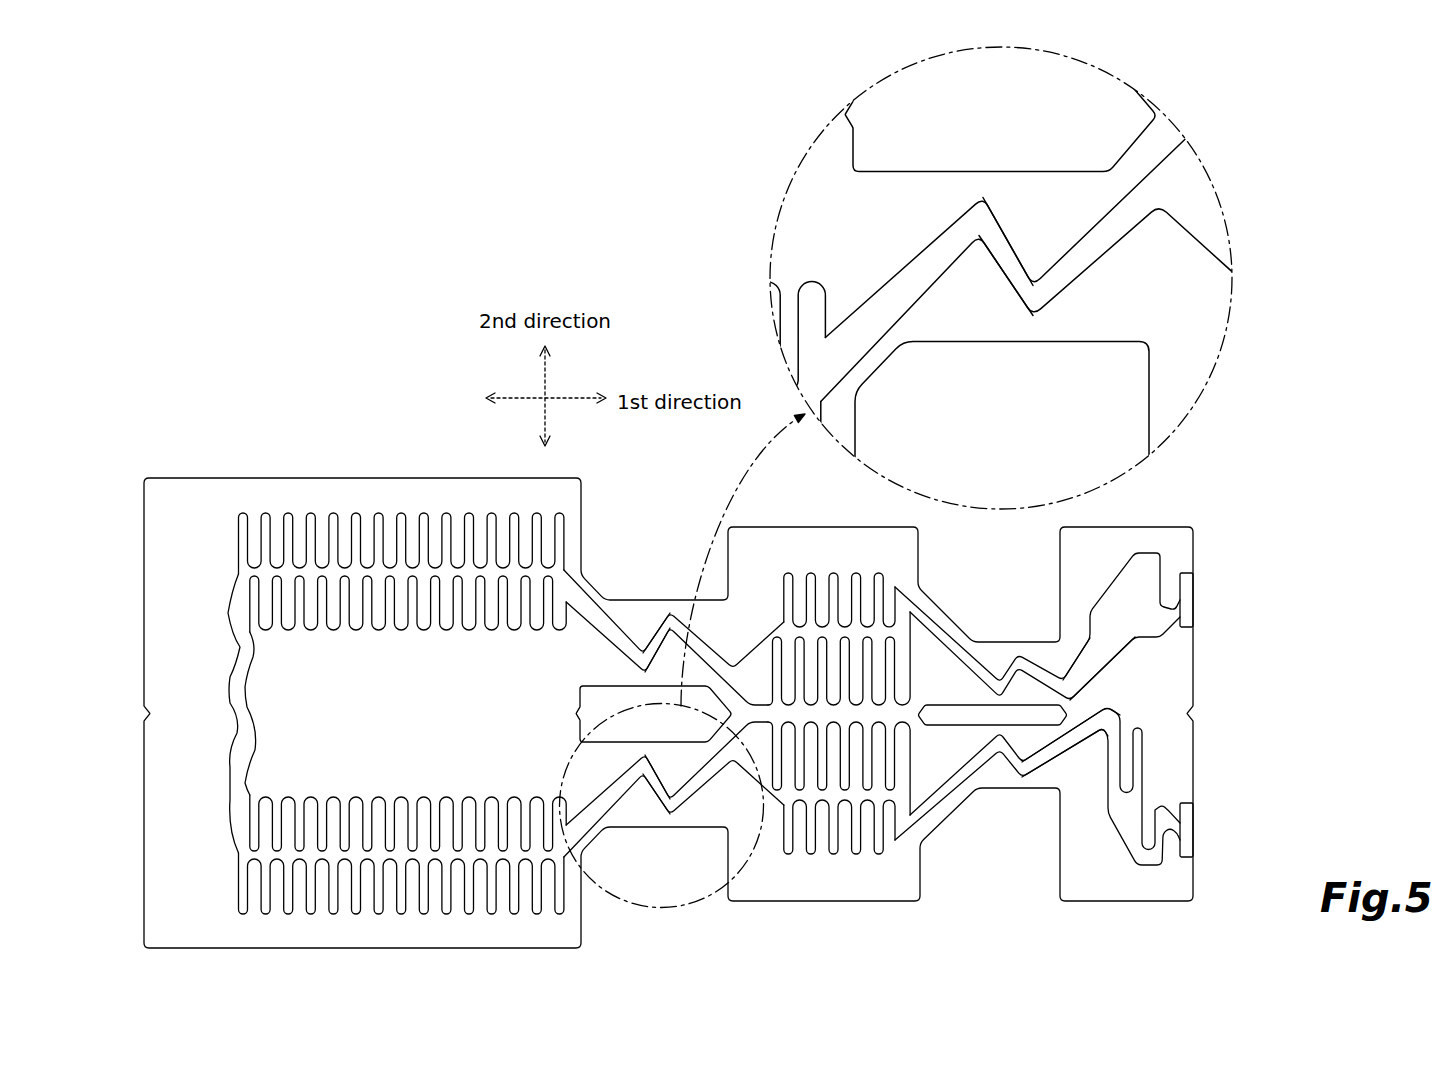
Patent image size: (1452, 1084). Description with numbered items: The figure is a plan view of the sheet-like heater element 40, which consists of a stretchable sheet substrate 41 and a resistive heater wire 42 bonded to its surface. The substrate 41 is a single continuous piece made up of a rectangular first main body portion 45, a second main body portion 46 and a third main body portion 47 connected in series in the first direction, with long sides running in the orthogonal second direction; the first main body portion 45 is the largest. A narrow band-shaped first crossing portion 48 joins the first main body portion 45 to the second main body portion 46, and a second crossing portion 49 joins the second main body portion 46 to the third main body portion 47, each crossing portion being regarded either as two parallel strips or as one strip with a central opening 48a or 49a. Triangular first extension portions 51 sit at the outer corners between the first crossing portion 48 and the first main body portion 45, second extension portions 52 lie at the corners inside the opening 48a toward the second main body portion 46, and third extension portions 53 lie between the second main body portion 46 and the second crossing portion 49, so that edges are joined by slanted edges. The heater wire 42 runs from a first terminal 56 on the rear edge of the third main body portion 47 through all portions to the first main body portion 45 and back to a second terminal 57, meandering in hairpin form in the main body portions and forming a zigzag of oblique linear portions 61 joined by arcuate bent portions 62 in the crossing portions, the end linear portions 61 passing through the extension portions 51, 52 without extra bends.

The heater element 40 is at (195, 472).
The substrate 41 is at (287, 472).
The heater wire 42 is at (1150, 552).
The first main body portion 45 is at (383, 492).
The second main body portion 46 is at (913, 893).
The third main body portion 47 is at (1183, 768).
The first crossing portion 48 is at (641, 608).
The central opening 48a is at (585, 691).
The second crossing portion 49 is at (1003, 648).
The central opening 49a is at (938, 719).
The first extension portion 51 is at (592, 587).
The second extension portion 52 is at (1140, 152).
The third extension portion 53 is at (948, 613).
The first terminal 56 is at (1193, 600).
The second terminal 57 is at (1183, 833).
The linear portion 61 is at (934, 235).
The bent portion 62 is at (975, 216).